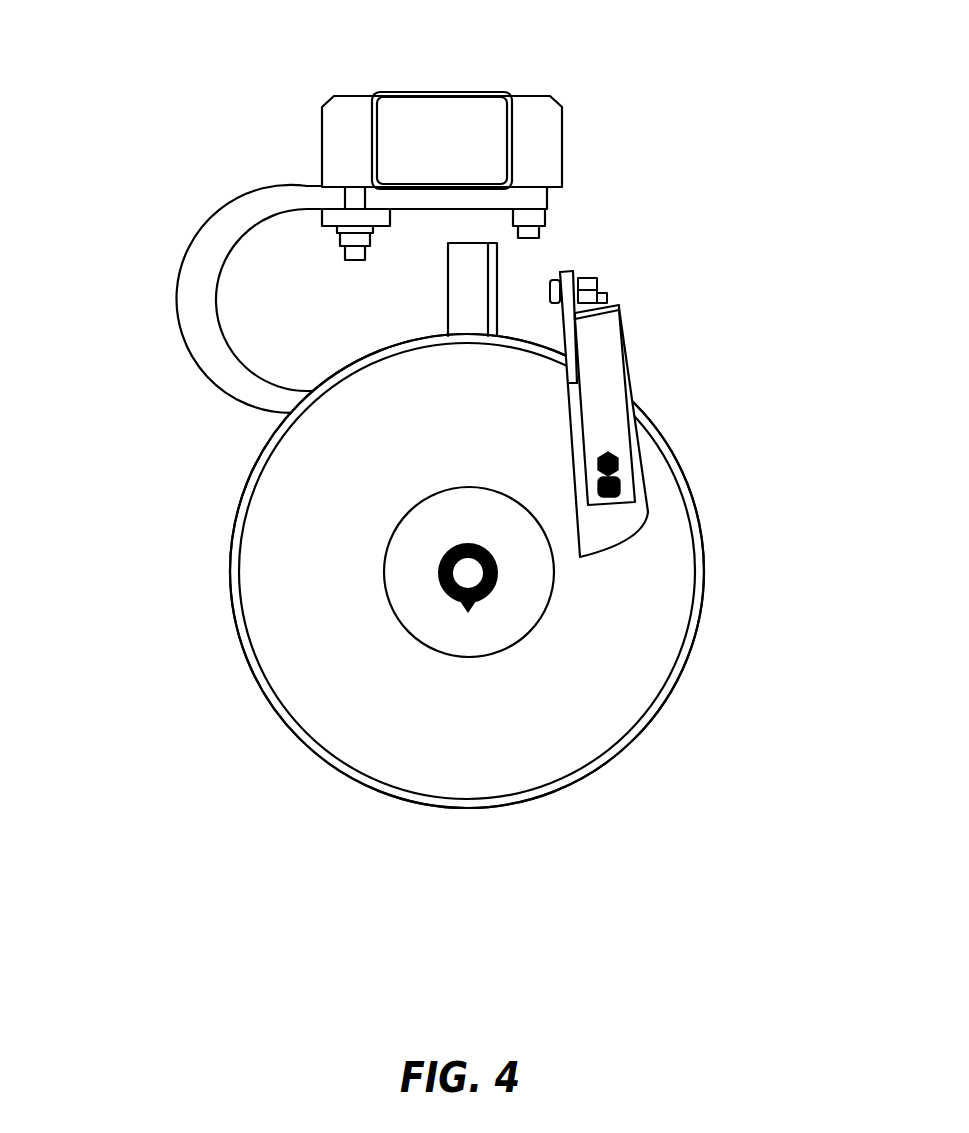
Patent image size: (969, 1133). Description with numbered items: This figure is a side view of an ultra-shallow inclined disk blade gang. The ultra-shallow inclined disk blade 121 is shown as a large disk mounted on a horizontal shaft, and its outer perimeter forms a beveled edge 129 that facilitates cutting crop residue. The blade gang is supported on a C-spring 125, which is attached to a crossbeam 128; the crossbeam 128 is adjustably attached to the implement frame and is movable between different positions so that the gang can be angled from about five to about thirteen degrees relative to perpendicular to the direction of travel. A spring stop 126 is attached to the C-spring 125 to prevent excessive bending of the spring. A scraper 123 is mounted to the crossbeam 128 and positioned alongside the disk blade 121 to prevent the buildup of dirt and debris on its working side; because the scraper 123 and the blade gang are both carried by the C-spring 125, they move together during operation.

The ultra-shallow inclined disk blade 121 is at (652, 602).
The scraper 123 is at (617, 517).
The C-spring 125 is at (197, 349).
The spring stop 126 is at (498, 274).
The crossbeam 128 is at (466, 91).
The beveled edge 129 is at (603, 767).